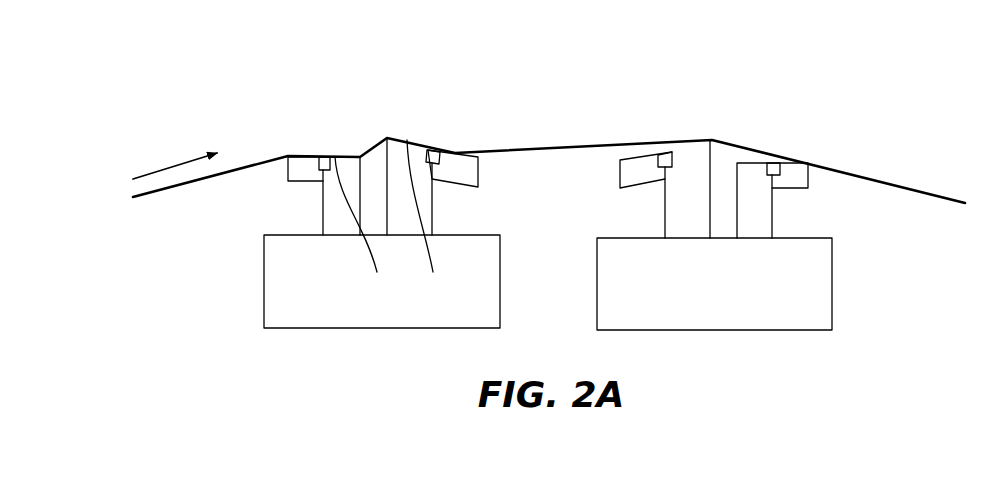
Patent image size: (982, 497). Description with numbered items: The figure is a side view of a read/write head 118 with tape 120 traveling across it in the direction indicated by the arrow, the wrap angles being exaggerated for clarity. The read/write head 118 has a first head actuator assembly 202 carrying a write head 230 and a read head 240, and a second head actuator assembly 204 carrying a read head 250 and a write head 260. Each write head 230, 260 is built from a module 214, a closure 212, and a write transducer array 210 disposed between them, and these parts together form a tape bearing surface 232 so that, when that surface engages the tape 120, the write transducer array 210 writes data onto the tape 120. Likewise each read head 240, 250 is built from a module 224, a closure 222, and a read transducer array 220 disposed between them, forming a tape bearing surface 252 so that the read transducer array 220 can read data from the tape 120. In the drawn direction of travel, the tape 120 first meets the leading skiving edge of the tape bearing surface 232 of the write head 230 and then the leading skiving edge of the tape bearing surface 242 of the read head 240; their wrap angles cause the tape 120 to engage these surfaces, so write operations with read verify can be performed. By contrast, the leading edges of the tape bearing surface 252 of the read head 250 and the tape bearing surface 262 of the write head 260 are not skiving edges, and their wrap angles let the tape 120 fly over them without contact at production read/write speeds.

The read/write head 118 is at (177, 98).
The tape 120 is at (928, 190).
The first head actuator assembly 202 is at (274, 316).
The second head actuator assembly 204 is at (608, 320).
The write transducer array 210 is at (331, 170).
The closure 212 is at (288, 168).
The module 214 is at (323, 205).
The read transducer array 220 is at (433, 163).
The closure 222 is at (478, 166).
The module 224 is at (432, 210).
The write head 230 is at (285, 187).
The tape bearing surface 232 is at (363, 229).
The read head 240 is at (481, 180).
The tape bearing surface 242 is at (428, 218).
The read head 250 is at (647, 147).
The tape bearing surface 252 is at (642, 158).
The write head 260 is at (752, 150).
The tape bearing surface 262 is at (747, 161).